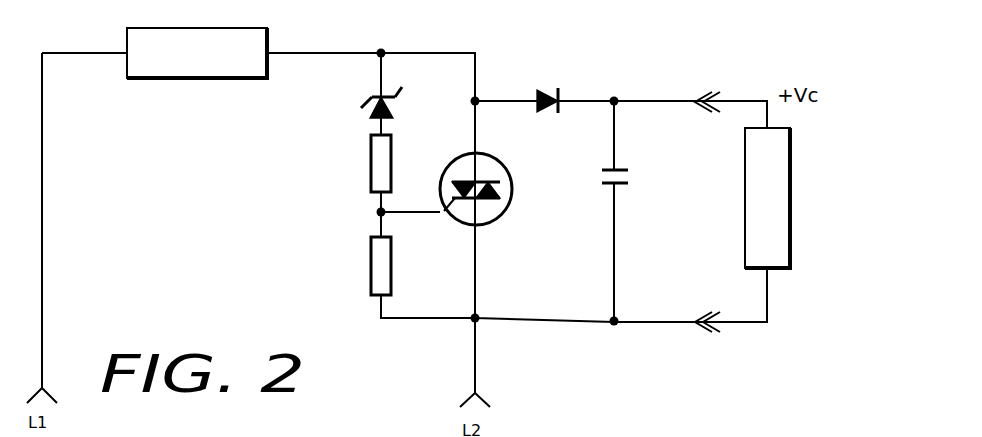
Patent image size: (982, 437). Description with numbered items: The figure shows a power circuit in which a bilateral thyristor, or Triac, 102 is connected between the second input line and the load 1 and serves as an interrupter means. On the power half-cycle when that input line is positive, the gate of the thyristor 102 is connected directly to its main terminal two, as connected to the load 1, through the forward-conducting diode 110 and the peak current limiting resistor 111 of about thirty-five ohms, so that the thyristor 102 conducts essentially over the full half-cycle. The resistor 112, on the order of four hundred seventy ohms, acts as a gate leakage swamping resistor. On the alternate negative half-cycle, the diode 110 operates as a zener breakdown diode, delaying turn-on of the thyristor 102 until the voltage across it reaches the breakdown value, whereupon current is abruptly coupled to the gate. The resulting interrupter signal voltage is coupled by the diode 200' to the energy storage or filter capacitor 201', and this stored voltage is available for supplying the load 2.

The load 1 is at (204, 32).
The load 2 is at (776, 203).
The thyristor 102 is at (500, 207).
The diode 110 is at (357, 108).
The peak current limiting resistor 111 is at (378, 154).
The gate leakage swamping resistor 112 is at (378, 283).
The diode 200' is at (577, 85).
The filter capacitor 201' is at (641, 162).